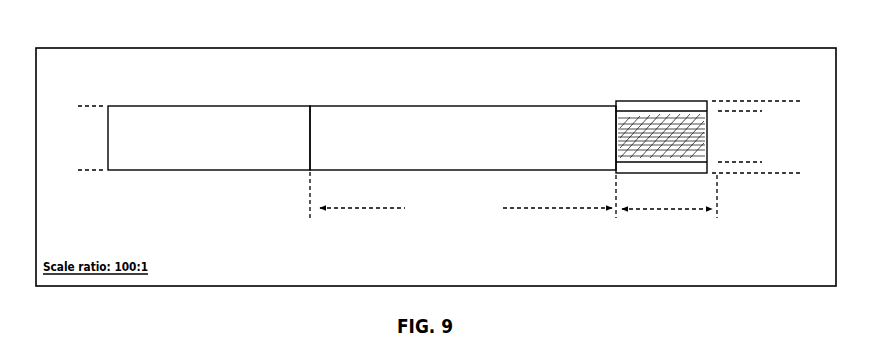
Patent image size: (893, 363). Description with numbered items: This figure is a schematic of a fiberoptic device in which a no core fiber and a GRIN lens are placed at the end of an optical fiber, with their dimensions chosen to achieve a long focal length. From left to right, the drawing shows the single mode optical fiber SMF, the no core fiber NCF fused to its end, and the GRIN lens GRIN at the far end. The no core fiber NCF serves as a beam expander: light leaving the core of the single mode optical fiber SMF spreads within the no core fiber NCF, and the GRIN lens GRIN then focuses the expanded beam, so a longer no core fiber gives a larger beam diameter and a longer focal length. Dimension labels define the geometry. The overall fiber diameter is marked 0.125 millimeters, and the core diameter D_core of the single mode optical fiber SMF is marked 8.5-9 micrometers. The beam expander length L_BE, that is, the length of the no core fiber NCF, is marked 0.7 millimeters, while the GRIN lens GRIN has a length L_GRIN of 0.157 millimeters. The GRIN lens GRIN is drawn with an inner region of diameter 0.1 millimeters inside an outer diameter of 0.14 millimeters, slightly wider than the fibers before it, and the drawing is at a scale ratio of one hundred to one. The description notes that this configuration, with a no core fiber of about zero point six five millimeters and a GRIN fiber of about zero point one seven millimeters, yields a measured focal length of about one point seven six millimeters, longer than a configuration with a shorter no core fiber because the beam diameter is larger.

The single mode optical fiber SMF is at (209, 138).
The no core fiber NCF is at (463, 138).
The GRIN lens GRIN is at (661, 137).
The fiber diameter 0.125 mm 0.125 is at (88, 107).
The core diameter D_core 8.5-9 is at (172, 141).
The beam expander length L_BE 0.7 is at (463, 195).
The GRIN fiber length L_GRIN 0.157 is at (668, 205).
The GRIN core diameter 0.1 mm 0.1 is at (750, 112).
The GRIN lens diameter 0.14 mm 0.14 is at (777, 108).